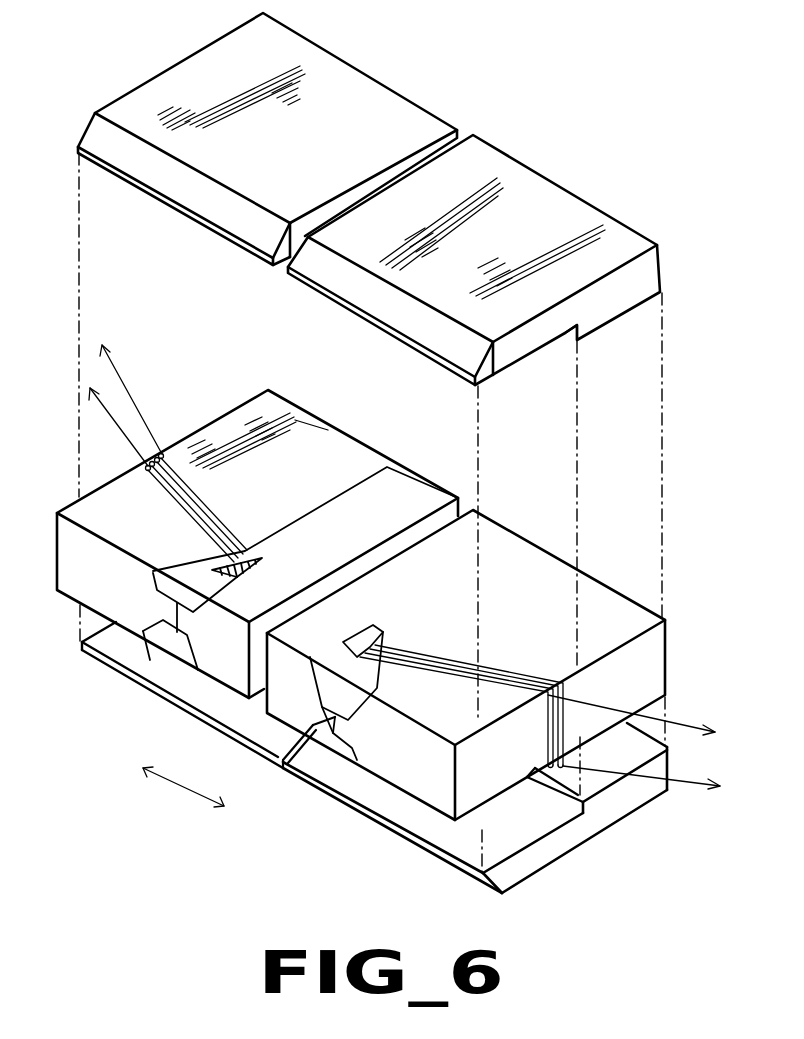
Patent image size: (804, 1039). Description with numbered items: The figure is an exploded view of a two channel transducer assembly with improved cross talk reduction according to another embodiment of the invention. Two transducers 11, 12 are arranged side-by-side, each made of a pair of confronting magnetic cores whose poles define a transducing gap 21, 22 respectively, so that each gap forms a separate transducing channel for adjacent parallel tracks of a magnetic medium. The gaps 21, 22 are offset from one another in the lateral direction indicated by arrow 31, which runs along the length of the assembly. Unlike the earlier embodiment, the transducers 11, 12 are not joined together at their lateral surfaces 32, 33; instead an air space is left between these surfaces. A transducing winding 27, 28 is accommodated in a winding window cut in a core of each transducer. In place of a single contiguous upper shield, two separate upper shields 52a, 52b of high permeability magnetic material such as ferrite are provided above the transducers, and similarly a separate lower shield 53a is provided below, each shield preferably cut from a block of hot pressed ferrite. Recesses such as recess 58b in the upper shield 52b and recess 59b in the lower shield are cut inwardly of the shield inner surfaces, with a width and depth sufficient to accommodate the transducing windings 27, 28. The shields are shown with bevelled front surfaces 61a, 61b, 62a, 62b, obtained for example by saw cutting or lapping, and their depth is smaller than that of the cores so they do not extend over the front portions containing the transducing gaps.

The transducer 11 is at (245, 398).
The transducer 12 is at (657, 643).
The transducing gap 21 is at (177, 610).
The transducing gap 22 is at (335, 727).
The transducing winding 27 is at (197, 493).
The transducing winding 28 is at (493, 665).
The lateral direction arrow 31 is at (183, 784).
The lateral surface 32 is at (392, 537).
The lateral surface 33 is at (362, 578).
The upper shield 52a is at (340, 68).
The upper shield 52b is at (553, 192).
The lower shield 53a is at (153, 670).
The recess 58b is at (558, 338).
The recess 59b is at (558, 818).
The bevelled front surface 61a is at (157, 180).
The bevelled front surface 61b is at (373, 298).
The bevelled front surface 62a is at (283, 763).
The bevelled front surface 62b is at (492, 888).